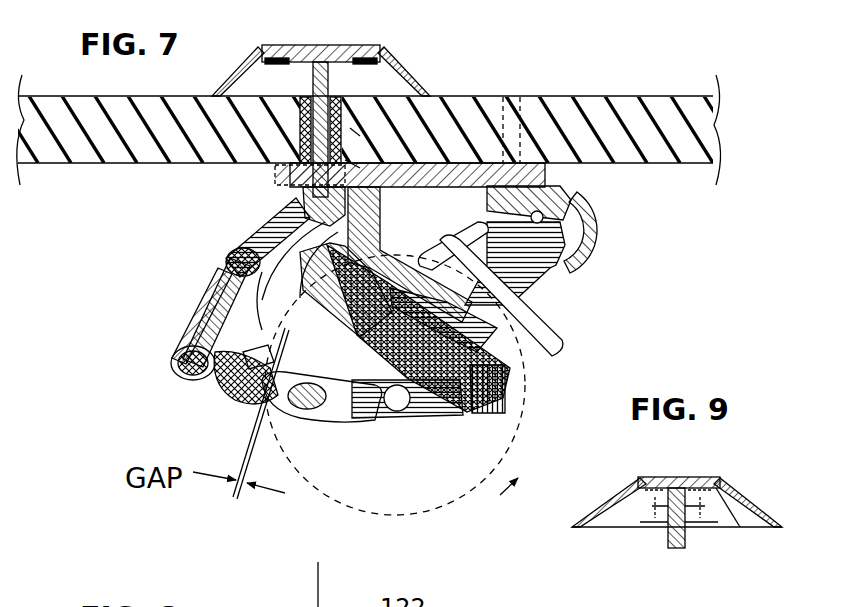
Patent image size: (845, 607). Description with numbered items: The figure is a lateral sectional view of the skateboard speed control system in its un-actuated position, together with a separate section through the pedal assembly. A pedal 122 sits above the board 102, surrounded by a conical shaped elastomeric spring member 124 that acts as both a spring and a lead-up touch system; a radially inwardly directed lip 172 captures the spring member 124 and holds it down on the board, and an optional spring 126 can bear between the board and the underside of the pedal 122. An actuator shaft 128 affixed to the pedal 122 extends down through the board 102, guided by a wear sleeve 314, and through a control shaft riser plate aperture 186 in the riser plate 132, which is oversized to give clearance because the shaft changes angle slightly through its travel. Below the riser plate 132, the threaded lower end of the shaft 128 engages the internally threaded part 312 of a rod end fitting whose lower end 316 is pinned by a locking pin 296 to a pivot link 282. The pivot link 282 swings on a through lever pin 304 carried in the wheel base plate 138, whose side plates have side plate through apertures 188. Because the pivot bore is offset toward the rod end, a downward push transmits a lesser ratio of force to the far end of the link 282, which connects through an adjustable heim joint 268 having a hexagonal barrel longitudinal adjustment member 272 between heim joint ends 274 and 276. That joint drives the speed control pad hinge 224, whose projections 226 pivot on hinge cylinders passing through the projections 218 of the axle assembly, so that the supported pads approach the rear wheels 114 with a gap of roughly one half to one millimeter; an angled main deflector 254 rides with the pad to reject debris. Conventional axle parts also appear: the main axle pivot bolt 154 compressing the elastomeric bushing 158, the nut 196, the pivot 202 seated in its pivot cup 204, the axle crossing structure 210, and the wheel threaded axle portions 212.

In FIG. 7, the board 102 is at (620, 96).
In FIG. 7, the pedal 122 is at (300, 45).
In FIG. 9, the pedal 122 is at (675, 477).
In FIG. 7, the conical shaped elastomeric spring member 124 is at (408, 76).
In FIG. 9, the conical shaped elastomeric spring member 124 is at (618, 526).
In FIG. 9, the optional spring 126 is at (650, 512).
In FIG. 7, the actuator shaft 128 is at (313, 76).
In FIG. 9, the actuator shaft 128 is at (690, 538).
In FIG. 7, the riser plate 132 is at (548, 178).
In FIG. 7, the wheel base plate 138 is at (592, 228).
In FIG. 7, the main axle pivot bolt 154 is at (492, 396).
In FIG. 7, the elastomeric bushing 158 is at (495, 350).
In FIG. 9, the radially inwardly directed lip 172 is at (725, 530).
In FIG. 7, the control shaft riser plate aperture 186 is at (356, 132).
In FIG. 7, the side plate through apertures 188 is at (385, 336).
In FIG. 7, the nut 196 is at (380, 216).
In FIG. 7, the pivot 202 is at (545, 290).
In FIG. 7, the pivot cup 204 is at (560, 266).
In FIG. 7, the axle crossing structure 210 is at (397, 412).
In FIG. 7, the wheel threaded axle portions 212 is at (405, 406).
In FIG. 7, the projections 218 is at (352, 412).
In FIG. 7, the speed control pad hinge 224 is at (225, 394).
In FIG. 7, the projections 226 is at (242, 414).
In FIG. 7, the angled main deflector 254 is at (190, 325).
In FIG. 7, the adjustable heim joint 268 is at (177, 312).
In FIG. 7, the hexagonal barrel longitudinal adjustment member 272 is at (198, 306).
In FIG. 7, the heim joint end 274 is at (173, 370).
In FIG. 7, the heim joint end 276 is at (228, 256).
In FIG. 7, the pivot link 282 is at (255, 226).
In FIG. 7, the locking pin 296 is at (347, 164).
In FIG. 7, the through lever pin 304 is at (272, 266).
In FIG. 7, the internally threaded part 312 is at (275, 178).
In FIG. 7, the wear sleeve 314 is at (300, 128).
In FIG. 7, the lower end 316 is at (300, 204).
In FIG. 7, the rear wheels 114 is at (334, 502).